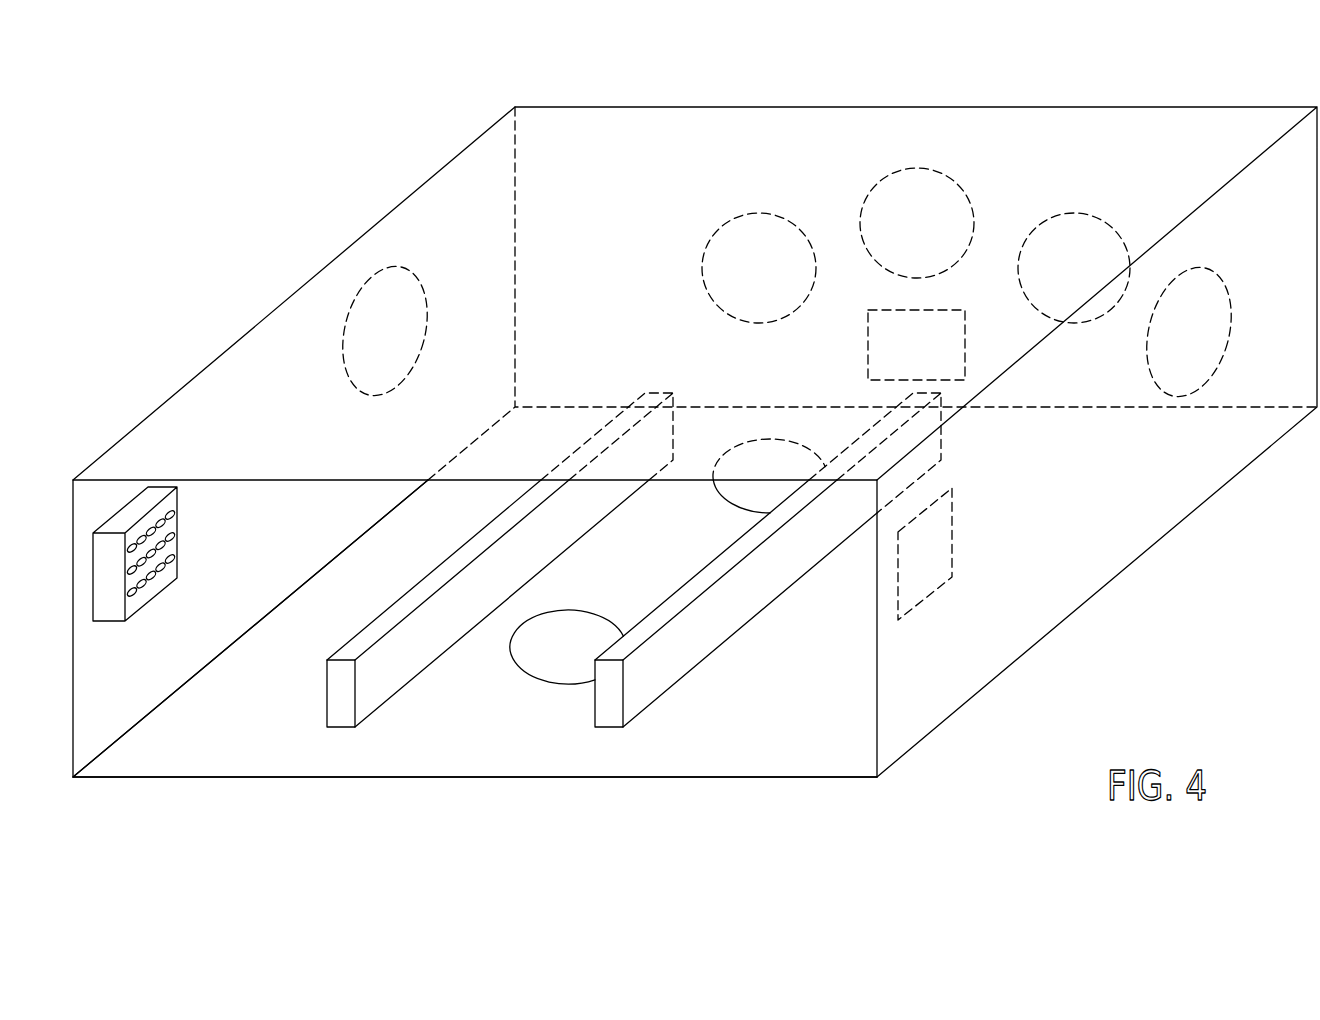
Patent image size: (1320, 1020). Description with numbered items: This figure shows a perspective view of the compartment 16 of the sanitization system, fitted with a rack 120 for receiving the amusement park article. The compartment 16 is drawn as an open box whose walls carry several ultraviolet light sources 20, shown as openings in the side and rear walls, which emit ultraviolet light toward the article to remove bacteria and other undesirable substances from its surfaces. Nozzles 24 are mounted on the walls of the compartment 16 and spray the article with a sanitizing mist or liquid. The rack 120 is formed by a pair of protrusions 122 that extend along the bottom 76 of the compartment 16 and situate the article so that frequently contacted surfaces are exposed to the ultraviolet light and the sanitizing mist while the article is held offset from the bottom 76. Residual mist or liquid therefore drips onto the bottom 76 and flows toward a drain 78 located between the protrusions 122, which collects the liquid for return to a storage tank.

The compartment 16 is at (1065, 107).
The ultraviolet light source 20 is at (350, 318).
The nozzle 24 is at (177, 531).
The bottom 76 is at (483, 762).
The drain 78 is at (530, 683).
The rack 120 is at (589, 565).
The protrusions 122 is at (418, 652).